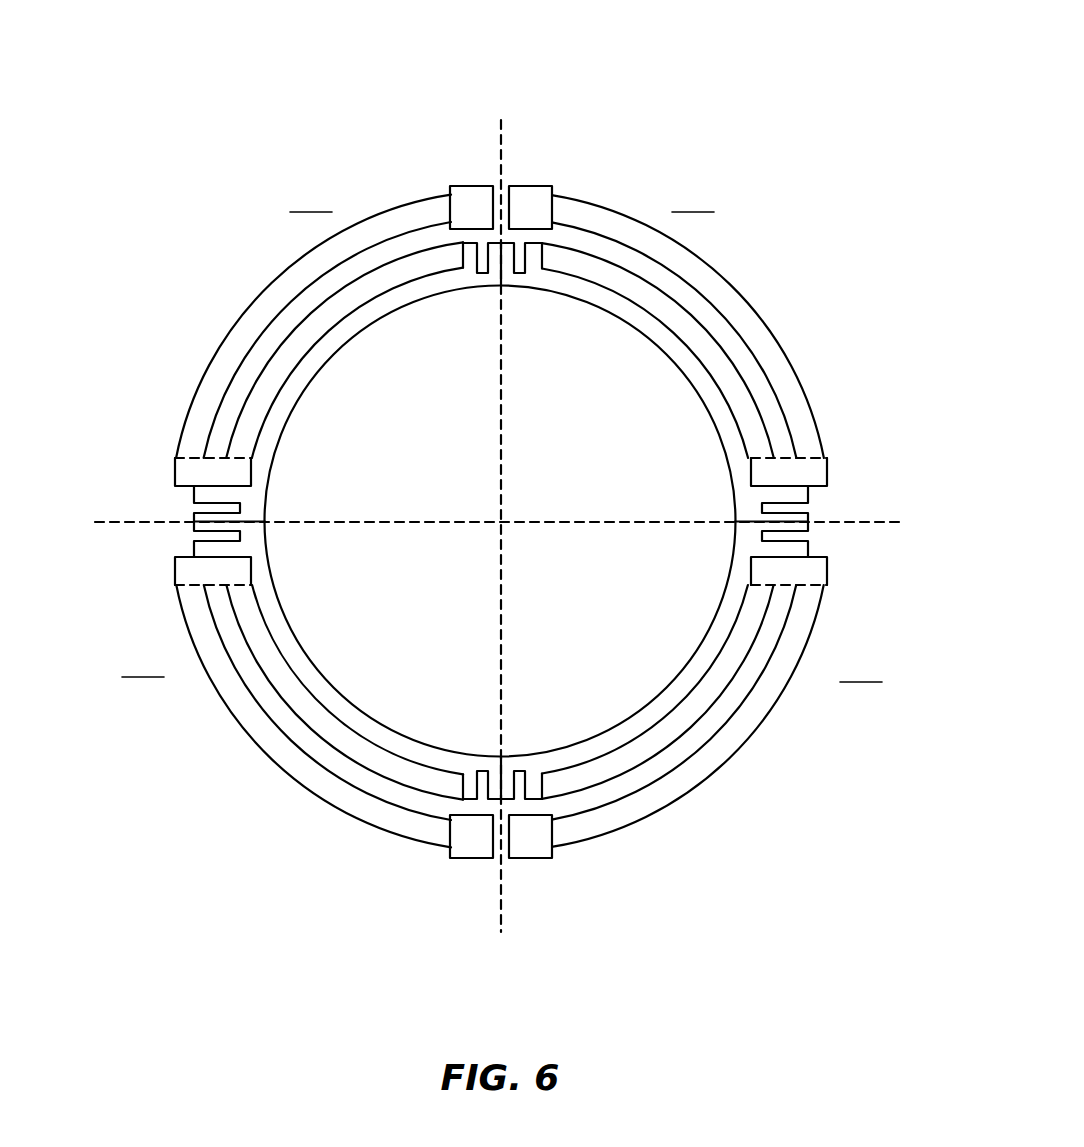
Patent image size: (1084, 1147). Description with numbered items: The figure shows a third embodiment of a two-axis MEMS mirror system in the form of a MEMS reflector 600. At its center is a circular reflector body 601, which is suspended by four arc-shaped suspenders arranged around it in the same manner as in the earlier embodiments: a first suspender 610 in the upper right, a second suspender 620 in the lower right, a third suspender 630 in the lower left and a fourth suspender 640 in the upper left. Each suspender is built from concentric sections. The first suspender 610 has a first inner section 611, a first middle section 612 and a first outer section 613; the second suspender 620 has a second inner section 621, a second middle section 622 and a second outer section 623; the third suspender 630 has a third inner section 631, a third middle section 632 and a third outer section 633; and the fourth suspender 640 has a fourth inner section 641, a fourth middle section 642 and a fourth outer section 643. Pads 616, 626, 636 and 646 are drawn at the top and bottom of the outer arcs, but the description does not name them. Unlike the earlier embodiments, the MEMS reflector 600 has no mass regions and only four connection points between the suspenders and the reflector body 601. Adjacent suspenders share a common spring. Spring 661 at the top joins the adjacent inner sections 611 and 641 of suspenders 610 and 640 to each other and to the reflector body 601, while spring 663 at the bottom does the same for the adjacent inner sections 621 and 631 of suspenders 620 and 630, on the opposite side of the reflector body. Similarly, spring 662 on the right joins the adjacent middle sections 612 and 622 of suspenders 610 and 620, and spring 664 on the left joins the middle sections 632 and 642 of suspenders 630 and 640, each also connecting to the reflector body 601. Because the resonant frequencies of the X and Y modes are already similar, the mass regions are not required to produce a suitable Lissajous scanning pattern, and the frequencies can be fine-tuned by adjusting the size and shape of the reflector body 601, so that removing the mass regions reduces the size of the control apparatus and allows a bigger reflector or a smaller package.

The MEMS reflector 600 is at (746, 127).
The reflector body 601 is at (590, 738).
The first suspender 610 is at (734, 283).
The first inner section 611 is at (750, 392).
The first middle section 612 is at (827, 472).
The first outer section 613 is at (728, 283).
The top connection pad of first segment 616 is at (532, 186).
The second suspender 620 is at (734, 761).
The second inner section 621 is at (750, 650).
The second middle section 622 is at (827, 571).
The second outer section 623 is at (728, 759).
The bottom connection pad of second segment 626 is at (532, 858).
The third suspender 630 is at (267, 761).
The third inner section 631 is at (250, 650).
The third middle section 632 is at (175, 571).
The third outer section 633 is at (272, 759).
The bottom connection pad of third segment 636 is at (470, 858).
The fourth suspender 640 is at (267, 283).
The fourth inner section 641 is at (250, 392).
The fourth middle section 642 is at (175, 472).
The fourth outer section 643 is at (272, 283).
The top connection pad of fourth segment 646 is at (470, 186).
The spring 661 is at (518, 273).
The spring 662 is at (762, 536).
The spring 663 is at (483, 770).
The spring 664 is at (240, 510).